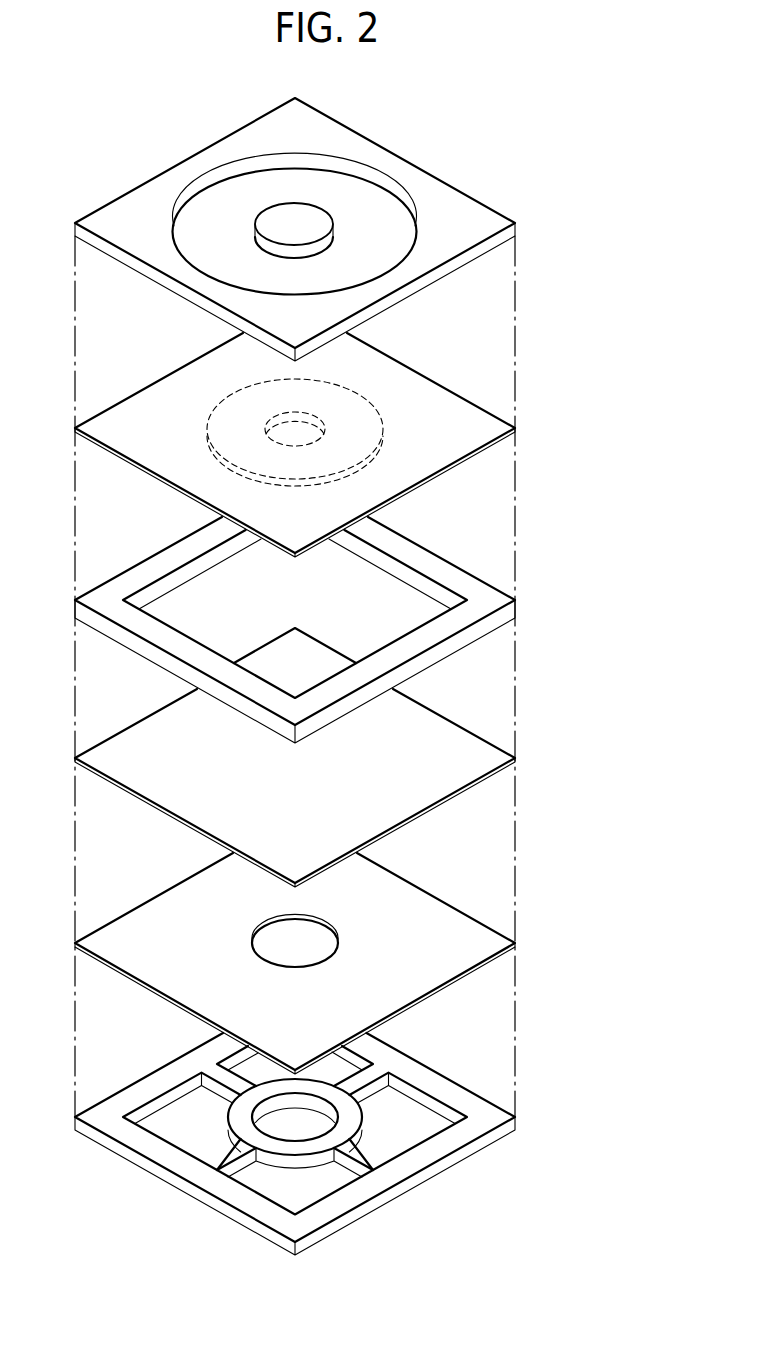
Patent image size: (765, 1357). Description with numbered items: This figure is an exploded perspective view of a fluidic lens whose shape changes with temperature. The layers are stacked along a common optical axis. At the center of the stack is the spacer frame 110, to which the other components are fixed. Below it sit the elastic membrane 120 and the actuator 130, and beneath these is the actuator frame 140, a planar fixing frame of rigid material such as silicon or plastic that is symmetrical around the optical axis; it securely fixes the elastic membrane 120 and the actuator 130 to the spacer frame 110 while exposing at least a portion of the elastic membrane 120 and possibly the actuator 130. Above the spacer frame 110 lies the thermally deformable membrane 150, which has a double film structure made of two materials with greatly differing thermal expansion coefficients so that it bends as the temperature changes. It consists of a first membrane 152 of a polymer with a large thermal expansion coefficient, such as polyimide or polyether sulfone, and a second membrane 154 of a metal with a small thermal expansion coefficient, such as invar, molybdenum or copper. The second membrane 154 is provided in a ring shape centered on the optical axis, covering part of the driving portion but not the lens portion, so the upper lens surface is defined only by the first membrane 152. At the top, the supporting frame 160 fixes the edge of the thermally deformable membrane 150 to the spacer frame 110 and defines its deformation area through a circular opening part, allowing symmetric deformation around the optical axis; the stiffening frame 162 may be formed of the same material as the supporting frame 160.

The spacer frame 110 is at (478, 597).
The elastic membrane 120 is at (478, 752).
The actuator 130 is at (480, 943).
The actuator frame 140 is at (478, 1112).
The thermally deformable membrane 150 is at (364, 445).
The first membrane 152 is at (448, 400).
The second membrane 154 is at (367, 457).
The supporting frame 160 is at (485, 217).
The stiffening frame 162 is at (310, 217).